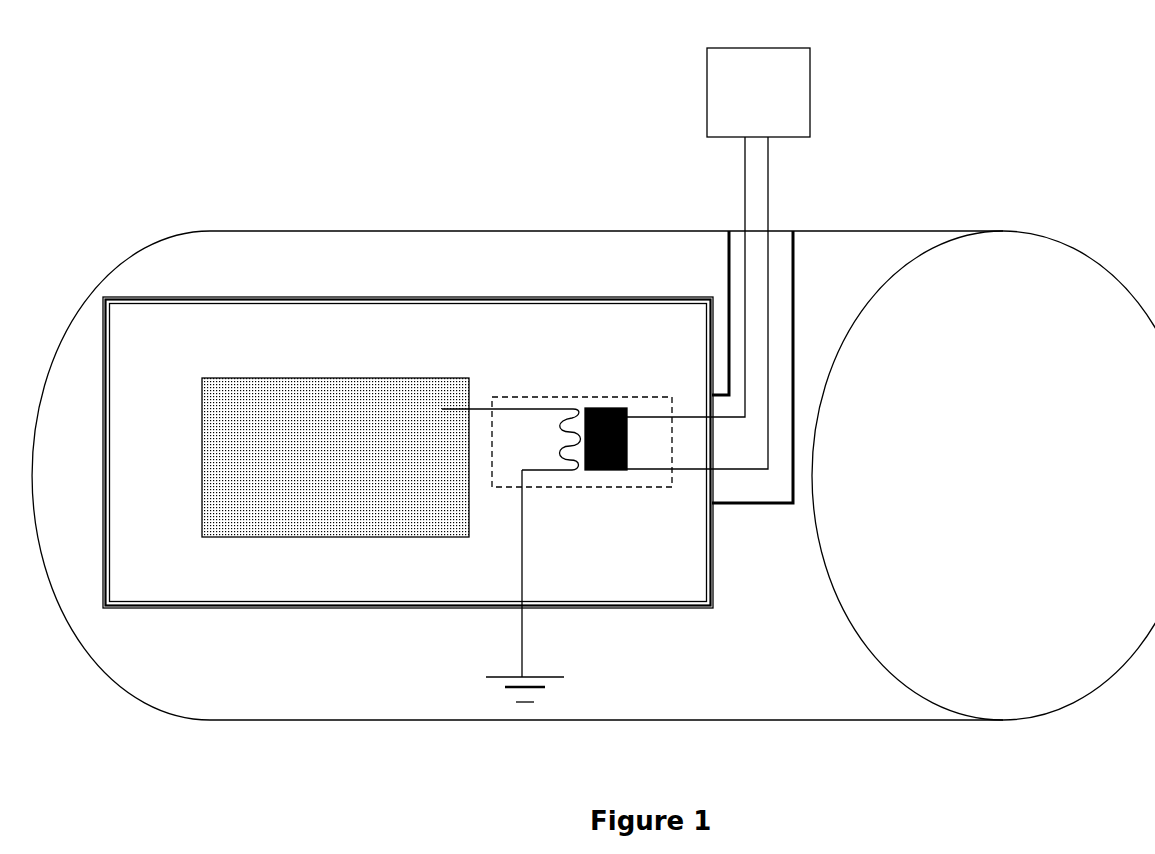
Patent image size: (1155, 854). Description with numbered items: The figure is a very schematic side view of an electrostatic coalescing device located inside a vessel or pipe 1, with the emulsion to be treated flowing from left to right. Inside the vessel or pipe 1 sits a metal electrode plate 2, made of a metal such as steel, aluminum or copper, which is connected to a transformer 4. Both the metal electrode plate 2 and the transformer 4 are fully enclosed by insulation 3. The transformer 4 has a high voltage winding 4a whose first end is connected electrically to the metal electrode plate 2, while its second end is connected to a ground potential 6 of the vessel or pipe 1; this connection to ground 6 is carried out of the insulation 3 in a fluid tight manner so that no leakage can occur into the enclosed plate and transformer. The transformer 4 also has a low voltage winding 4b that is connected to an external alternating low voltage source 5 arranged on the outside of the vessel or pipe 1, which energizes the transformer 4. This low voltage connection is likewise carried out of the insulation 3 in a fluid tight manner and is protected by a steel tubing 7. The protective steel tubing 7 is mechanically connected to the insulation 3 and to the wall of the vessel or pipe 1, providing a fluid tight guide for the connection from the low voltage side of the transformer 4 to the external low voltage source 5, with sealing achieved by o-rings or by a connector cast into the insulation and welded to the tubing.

The vessel or pipe 1 is at (1028, 298).
The metal electrode plate 2 is at (335, 457).
The insulation 3 is at (408, 452).
The transformer 4 is at (557, 414).
The high voltage winding 4a is at (547, 439).
The low voltage winding 4b is at (626, 439).
The alternating low voltage source 5 is at (718, 255).
The ground potential 6 is at (522, 571).
The steel tubing 7 is at (795, 268).